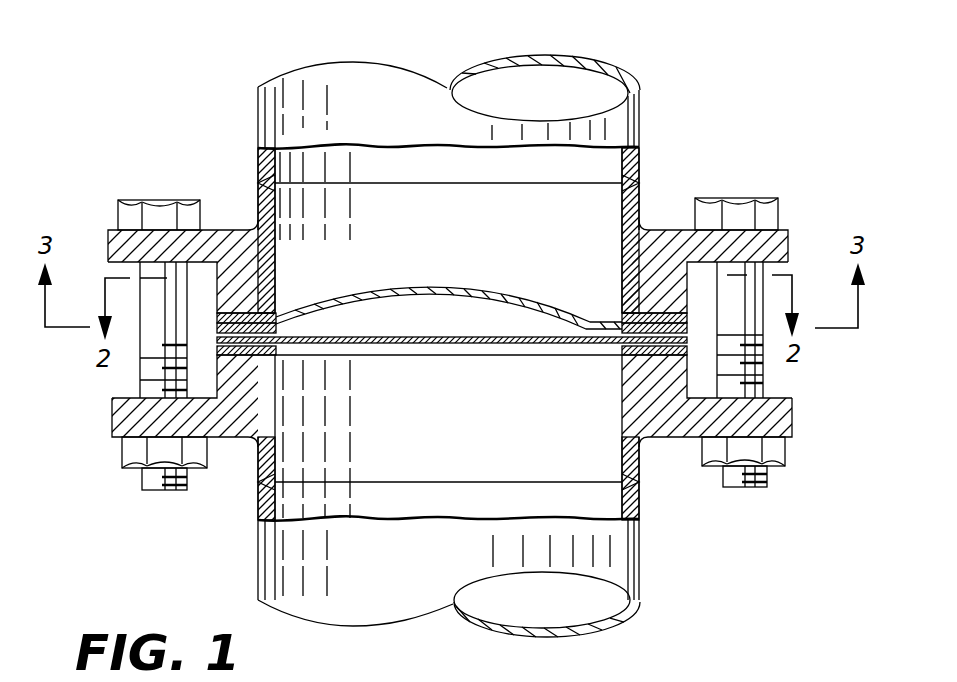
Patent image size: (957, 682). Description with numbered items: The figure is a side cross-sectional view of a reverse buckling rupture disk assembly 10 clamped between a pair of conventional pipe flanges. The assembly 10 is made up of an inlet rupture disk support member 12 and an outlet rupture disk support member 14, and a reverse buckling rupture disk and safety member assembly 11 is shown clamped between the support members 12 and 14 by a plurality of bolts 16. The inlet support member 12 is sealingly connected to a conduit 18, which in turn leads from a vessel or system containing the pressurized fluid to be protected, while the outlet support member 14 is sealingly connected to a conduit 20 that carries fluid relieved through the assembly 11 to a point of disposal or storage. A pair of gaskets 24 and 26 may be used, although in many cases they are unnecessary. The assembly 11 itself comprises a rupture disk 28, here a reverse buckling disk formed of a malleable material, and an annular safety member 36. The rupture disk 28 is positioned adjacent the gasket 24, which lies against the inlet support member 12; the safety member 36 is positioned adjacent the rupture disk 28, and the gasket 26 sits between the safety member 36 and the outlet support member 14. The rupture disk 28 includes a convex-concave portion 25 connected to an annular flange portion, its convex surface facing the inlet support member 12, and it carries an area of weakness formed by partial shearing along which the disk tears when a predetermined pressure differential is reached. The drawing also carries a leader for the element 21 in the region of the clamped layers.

The rupture disk assembly 10 is at (680, 102).
The reverse buckling rupture disk and safety member assembly 11 is at (512, 272).
The inlet rupture disk support member 12 is at (238, 240).
The outlet rupture disk support member 14 is at (232, 407).
The bolts 16 is at (150, 268).
The conduit 18 is at (620, 128).
The conduit 20 is at (620, 543).
The inlet holder gasket 21 is at (290, 312).
The gasket 24 is at (647, 310).
The convex-concave portion 25 is at (454, 288).
The gasket 26 is at (640, 350).
The rupture disk 28 is at (366, 278).
The annular safety member 36 is at (452, 358).